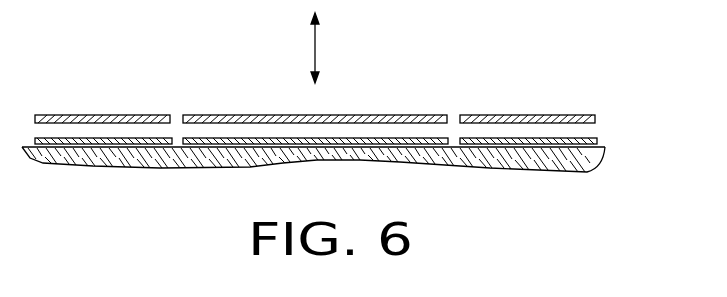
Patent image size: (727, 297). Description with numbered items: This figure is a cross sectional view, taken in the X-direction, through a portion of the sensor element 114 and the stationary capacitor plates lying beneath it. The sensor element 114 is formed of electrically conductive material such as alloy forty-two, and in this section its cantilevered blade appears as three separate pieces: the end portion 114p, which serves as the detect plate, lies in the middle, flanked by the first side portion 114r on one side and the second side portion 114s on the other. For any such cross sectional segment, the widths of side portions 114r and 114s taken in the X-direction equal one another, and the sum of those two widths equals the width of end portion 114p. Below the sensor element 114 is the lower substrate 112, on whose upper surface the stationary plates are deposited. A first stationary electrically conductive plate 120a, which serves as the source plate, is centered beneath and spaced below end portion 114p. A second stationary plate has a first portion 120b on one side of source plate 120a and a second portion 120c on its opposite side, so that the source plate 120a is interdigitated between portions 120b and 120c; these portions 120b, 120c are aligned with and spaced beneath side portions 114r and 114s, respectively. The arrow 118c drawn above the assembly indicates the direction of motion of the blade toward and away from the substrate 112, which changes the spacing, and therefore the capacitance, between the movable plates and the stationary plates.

The lower substrate 112 is at (283, 156).
The sensor element 114 is at (315, 84).
The first side portion 114r is at (117, 115).
The end portion 114p is at (315, 115).
The second side portion 114s is at (520, 115).
The Z-direction arrow 118c is at (315, 50).
The first stationary electrically conductive plate 120a is at (227, 147).
The first portion of second stationary plate 120b is at (110, 145).
The second portion of second stationary plate 120c is at (520, 145).